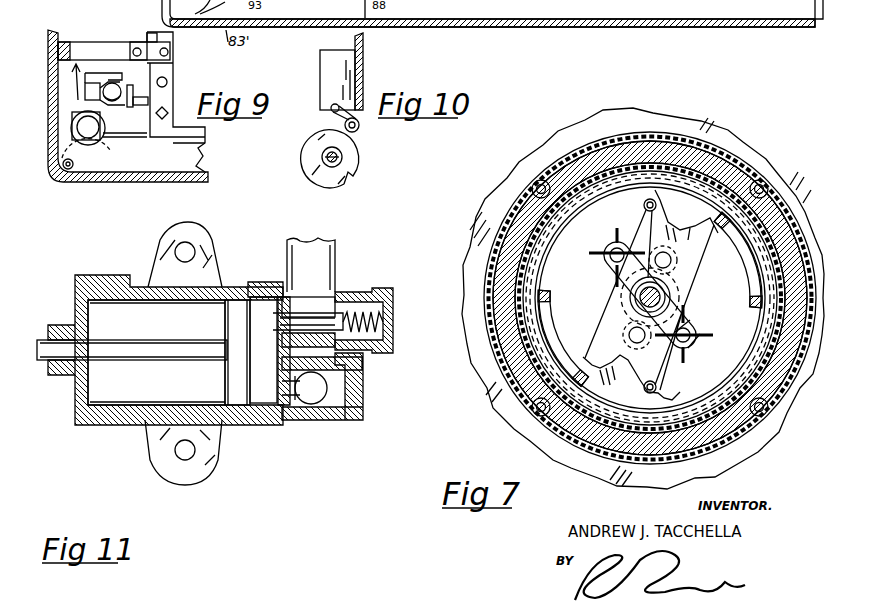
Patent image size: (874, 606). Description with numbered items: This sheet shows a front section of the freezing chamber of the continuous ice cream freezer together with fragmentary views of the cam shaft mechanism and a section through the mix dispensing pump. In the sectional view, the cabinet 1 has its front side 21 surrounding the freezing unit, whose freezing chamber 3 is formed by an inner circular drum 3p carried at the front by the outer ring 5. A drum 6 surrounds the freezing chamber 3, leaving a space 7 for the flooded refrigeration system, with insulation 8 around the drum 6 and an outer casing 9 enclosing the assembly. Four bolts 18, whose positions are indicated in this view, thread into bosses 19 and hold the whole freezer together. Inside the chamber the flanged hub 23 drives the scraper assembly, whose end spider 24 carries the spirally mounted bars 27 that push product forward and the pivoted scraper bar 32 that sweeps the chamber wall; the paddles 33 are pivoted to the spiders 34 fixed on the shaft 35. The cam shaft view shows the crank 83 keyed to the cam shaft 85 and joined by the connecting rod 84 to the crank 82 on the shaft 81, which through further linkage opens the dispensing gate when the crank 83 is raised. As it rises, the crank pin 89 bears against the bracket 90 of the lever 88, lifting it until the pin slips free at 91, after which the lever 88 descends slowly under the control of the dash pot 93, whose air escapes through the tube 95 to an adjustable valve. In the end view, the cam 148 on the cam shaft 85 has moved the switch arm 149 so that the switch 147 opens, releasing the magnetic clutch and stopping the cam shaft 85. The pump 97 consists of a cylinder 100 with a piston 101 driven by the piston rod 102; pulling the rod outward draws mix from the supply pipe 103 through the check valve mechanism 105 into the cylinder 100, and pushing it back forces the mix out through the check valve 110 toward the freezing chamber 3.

In FIG. 9, the cabinet 1 is at (140, 180).
In FIG. 7, the freezing chamber 3 is at (626, 380).
In FIG. 7, the inner circular drum 3p is at (492, 394).
In FIG. 7, the outer ring 5 is at (714, 155).
In FIG. 7, the drum 6 is at (729, 170).
In FIG. 7, the space 7 is at (749, 176).
In FIG. 7, the insulation 8 is at (807, 141).
In FIG. 7, the outer casing 9 is at (566, 160).
In FIG. 7, the bolts 18 is at (532, 187).
In FIG. 7, the bosses 19 is at (528, 432).
In FIG. 7, the front side 21 is at (633, 108).
In FIG. 7, the flanged hub 23 is at (680, 260).
In FIG. 7, the end spider 24 is at (685, 272).
In FIG. 7, the spirally mounted bars 27 is at (553, 293).
In FIG. 7, the scraper bar 32 is at (640, 206).
In FIG. 7, the paddles 33 is at (614, 245).
In FIG. 7, the spiders 34 is at (700, 323).
In FIG. 7, the shaft 35 is at (638, 298).
In FIG. 9, the shaft 81 is at (148, 36).
In FIG. 9, the crank 82 is at (120, 75).
In FIG. 9, the crank 83 is at (140, 92).
In FIG. 9, the connecting rod 84 is at (110, 102).
In FIG. 9, the cam shaft 85 is at (148, 100).
In FIG. 10, the cam shaft 85 is at (345, 158).
In FIG. 9, the lever 88 is at (112, 140).
In FIG. 9, the crank pin 89 is at (92, 83).
In FIG. 9, the bracket 90 is at (88, 128).
In FIG. 9, the disengagement point 91 is at (78, 62).
In FIG. 9, the dash pot 93 is at (89, 135).
In FIG. 9, the tube 95 is at (63, 172).
In FIG. 11, the pump 97 is at (156, 352).
In FIG. 11, the cylinder 100 is at (143, 418).
In FIG. 11, the piston 101 is at (251, 351).
In FIG. 11, the piston rod 102 is at (132, 350).
In FIG. 11, the supply pipe 103 is at (311, 265).
In FIG. 11, the check valve mechanism 105 is at (312, 318).
In FIG. 11, the check valve 110 is at (314, 398).
In FIG. 10, the switch 147 is at (363, 62).
In FIG. 10, the cam 148 is at (308, 159).
In FIG. 10, the switch arm 149 is at (337, 115).